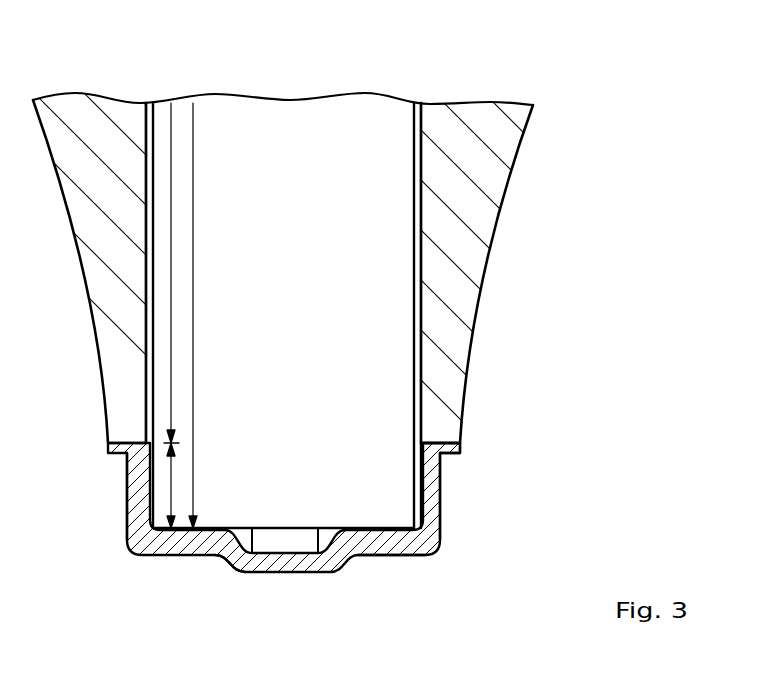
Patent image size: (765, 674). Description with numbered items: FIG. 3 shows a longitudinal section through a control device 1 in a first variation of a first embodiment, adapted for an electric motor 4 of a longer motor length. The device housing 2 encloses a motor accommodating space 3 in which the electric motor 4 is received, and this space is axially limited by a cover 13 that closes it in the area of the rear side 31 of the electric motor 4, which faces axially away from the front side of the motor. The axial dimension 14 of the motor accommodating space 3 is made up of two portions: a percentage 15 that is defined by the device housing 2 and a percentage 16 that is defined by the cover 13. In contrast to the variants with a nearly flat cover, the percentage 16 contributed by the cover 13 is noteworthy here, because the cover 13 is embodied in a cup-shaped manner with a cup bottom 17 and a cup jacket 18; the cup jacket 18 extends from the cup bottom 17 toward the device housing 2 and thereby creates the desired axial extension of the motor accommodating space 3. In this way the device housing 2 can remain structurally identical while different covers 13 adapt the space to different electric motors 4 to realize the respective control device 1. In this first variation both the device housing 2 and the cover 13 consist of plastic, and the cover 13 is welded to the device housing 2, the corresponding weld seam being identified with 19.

The control device 1 is at (582, 148).
The device housing 2 is at (466, 373).
The motor accommodating space 3 is at (418, 326).
The electric motor 4 is at (413, 270).
The cover 13 is at (441, 528).
The axial dimension of the motor accommodating space 14 is at (193, 350).
The percentage of the dimension defined by the device housing 15 is at (146, 349).
The percentage of the dimension defined by the cover 16 is at (172, 488).
The cup bottom 17 is at (372, 548).
The cup jacket 18 is at (437, 497).
The weld seam 19 is at (441, 454).
The rear side of the electric motor 31 is at (212, 530).